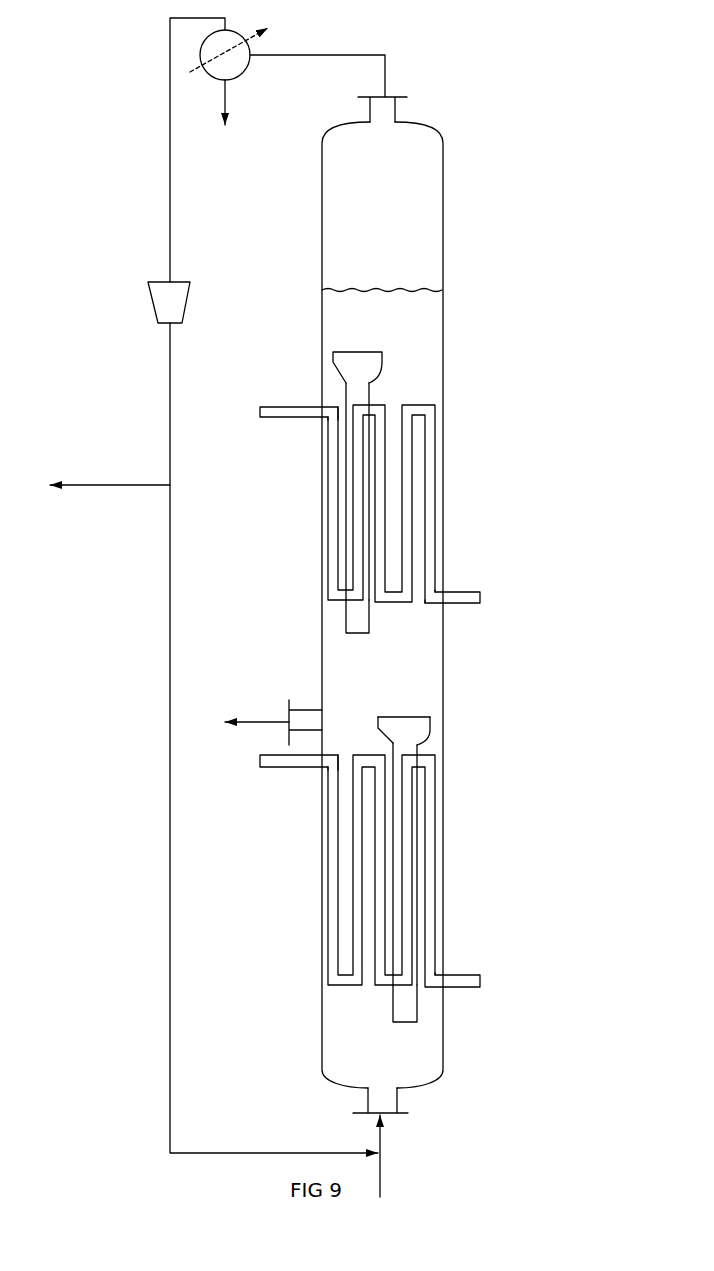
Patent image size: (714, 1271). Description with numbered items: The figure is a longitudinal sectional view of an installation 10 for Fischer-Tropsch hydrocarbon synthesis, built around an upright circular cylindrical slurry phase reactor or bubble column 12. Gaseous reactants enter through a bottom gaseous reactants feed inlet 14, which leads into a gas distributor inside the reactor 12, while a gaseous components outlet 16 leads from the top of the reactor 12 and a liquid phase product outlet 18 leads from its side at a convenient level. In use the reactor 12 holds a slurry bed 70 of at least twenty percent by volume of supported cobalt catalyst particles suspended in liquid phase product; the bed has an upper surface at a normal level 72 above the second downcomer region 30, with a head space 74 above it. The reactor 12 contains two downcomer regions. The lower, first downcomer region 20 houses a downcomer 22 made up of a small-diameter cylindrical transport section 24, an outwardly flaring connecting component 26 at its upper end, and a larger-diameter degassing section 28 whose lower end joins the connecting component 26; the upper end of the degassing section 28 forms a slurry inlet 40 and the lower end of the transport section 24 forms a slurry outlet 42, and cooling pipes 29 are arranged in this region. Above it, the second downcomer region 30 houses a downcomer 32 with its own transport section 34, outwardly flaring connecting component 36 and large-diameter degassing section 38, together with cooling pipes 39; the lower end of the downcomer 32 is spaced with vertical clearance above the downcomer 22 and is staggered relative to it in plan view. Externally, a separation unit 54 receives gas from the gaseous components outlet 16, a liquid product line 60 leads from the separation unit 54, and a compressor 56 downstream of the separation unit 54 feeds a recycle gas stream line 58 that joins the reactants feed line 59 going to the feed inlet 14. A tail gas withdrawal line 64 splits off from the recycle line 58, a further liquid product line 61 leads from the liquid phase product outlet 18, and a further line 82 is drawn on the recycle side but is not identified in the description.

The installation 10 is at (548, 222).
The slurry phase reactor 12 is at (443, 240).
The gaseous reactants feed inlet 14 is at (398, 1098).
The gaseous components outlet 16 is at (383, 107).
The liquid phase product outlet 18 is at (307, 708).
The first downcomer region 20 is at (460, 892).
The downcomer 22 is at (410, 752).
The transport section 24 is at (403, 1002).
The connecting component 26 is at (427, 733).
The degassing section 28 is at (430, 722).
The cooling pipes 29 is at (332, 863).
The second downcomer region 30 is at (455, 472).
The downcomer 32 is at (350, 389).
The transport section 34 is at (350, 615).
The connecting component 36 is at (340, 368).
The degassing section 38 is at (332, 358).
The cooling pipes 39 is at (445, 521).
The inlet 40 is at (410, 715).
The slurry outlet 42 is at (408, 1028).
The separation unit 54 is at (250, 67).
The compressor 56 is at (165, 300).
The recycle gas stream line 58 is at (170, 577).
The reactants feed line 59 is at (382, 1163).
The liquid product line 60 is at (228, 93).
The further liquid product line 61 is at (263, 717).
The tail gas withdrawal line 64 is at (110, 482).
The slurry bed 70 is at (423, 338).
The normal level 72 is at (397, 295).
The head space 74 is at (427, 197).
The recycle conduit 82 is at (170, 178).